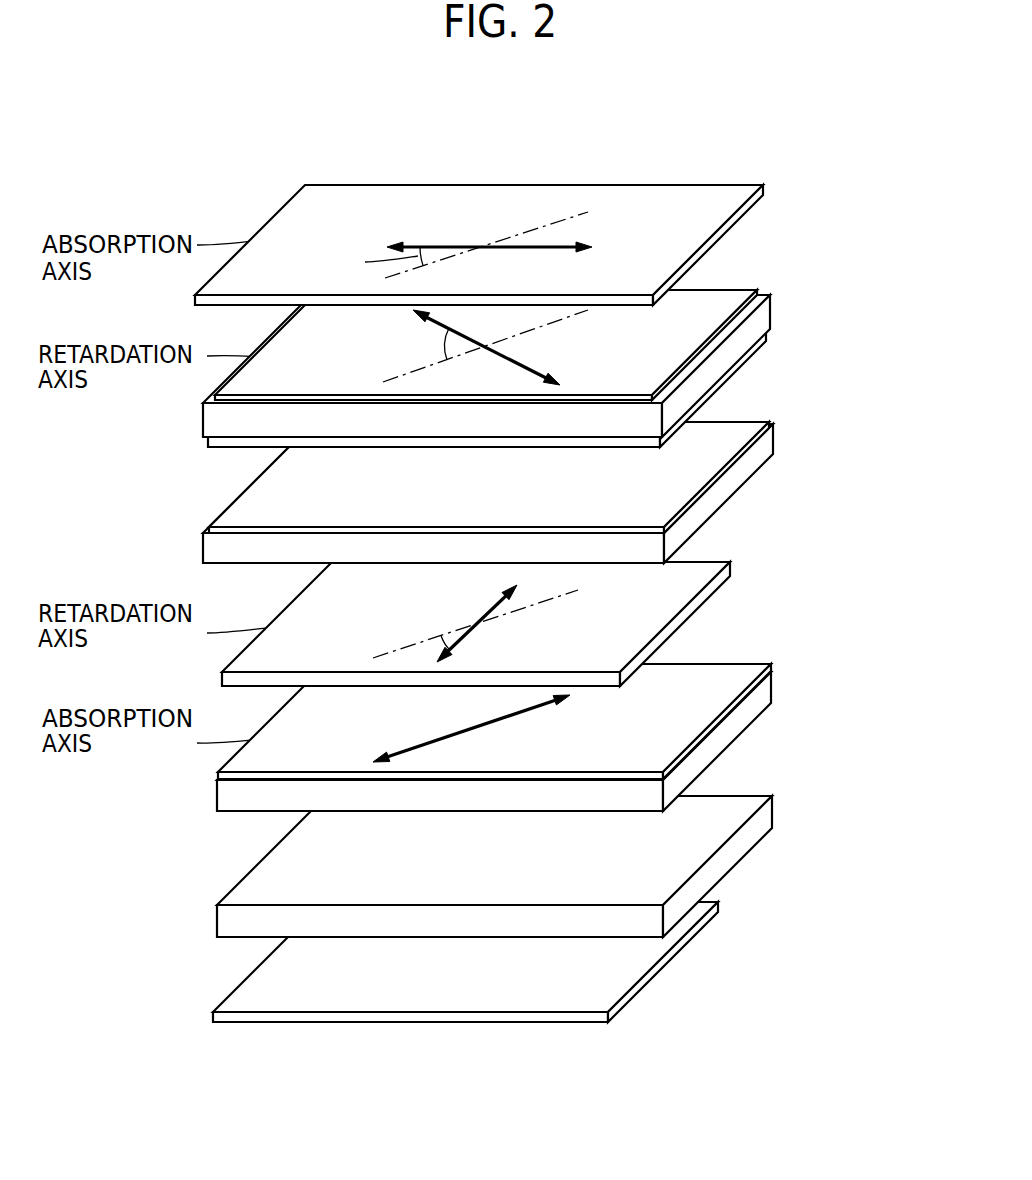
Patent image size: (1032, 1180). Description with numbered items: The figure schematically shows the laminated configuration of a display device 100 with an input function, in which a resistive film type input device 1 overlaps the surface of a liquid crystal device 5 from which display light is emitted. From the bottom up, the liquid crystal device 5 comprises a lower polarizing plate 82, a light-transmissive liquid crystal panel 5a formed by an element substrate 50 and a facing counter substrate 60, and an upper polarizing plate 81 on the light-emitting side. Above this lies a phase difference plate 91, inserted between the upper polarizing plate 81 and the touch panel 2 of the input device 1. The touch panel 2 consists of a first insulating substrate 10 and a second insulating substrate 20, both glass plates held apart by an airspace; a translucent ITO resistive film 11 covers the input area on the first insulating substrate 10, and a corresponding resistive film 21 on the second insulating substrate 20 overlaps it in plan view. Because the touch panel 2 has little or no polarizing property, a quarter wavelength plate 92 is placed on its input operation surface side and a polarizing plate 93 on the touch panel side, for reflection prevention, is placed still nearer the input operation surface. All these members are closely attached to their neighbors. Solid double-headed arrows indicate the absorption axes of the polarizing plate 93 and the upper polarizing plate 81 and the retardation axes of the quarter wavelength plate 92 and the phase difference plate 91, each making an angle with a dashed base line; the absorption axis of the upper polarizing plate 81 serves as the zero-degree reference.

The display device with an input function 100 is at (318, 157).
The input device 1 is at (563, 399).
The touch panel 2 is at (547, 429).
The liquid crystal device 5 is at (566, 842).
The liquid crystal panel 5a is at (549, 804).
The polarizing plate on the touch panel side 93 is at (526, 212).
The ¼ wavelength plate 92 is at (733, 295).
The second insulating substrate 20 is at (530, 366).
The resistive film 21 is at (323, 440).
The resistive film 11 is at (472, 528).
The first insulating substrate 10 is at (768, 447).
The phase difference plate 91 is at (708, 567).
The upper polarizing plate 81 is at (556, 721).
The element substrate 50 is at (738, 720).
The counter substrate 60 is at (757, 825).
The lower polarizing plate 82 is at (680, 947).